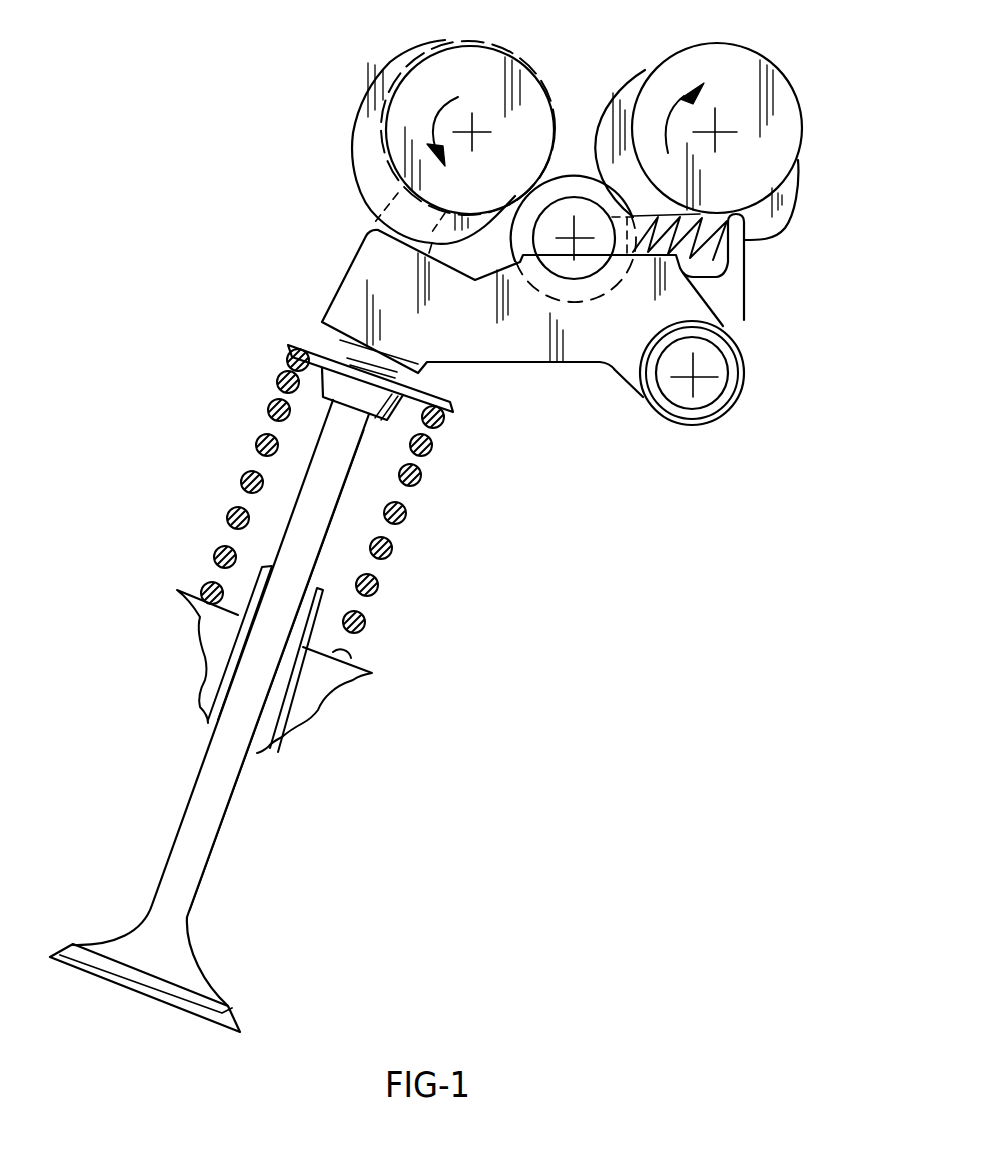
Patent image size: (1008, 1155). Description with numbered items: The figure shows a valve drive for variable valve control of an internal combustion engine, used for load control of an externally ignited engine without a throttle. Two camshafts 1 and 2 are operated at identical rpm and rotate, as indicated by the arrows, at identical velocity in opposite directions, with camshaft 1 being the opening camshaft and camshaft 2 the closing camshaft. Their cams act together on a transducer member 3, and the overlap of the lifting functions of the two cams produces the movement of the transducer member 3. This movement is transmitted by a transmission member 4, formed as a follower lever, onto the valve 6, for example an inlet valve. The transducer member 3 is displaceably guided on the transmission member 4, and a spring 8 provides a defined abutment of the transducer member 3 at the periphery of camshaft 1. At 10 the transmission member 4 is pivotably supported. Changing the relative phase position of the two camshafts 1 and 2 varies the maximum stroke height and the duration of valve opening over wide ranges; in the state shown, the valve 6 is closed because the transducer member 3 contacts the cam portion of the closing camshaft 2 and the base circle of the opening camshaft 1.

The camshaft 1 is at (412, 103).
The camshaft 2 is at (782, 100).
The transducer member 3 is at (568, 182).
The transmission member 4 is at (588, 340).
The valve 6 is at (220, 803).
The spring 8 is at (633, 217).
The pivot support 10 is at (713, 388).